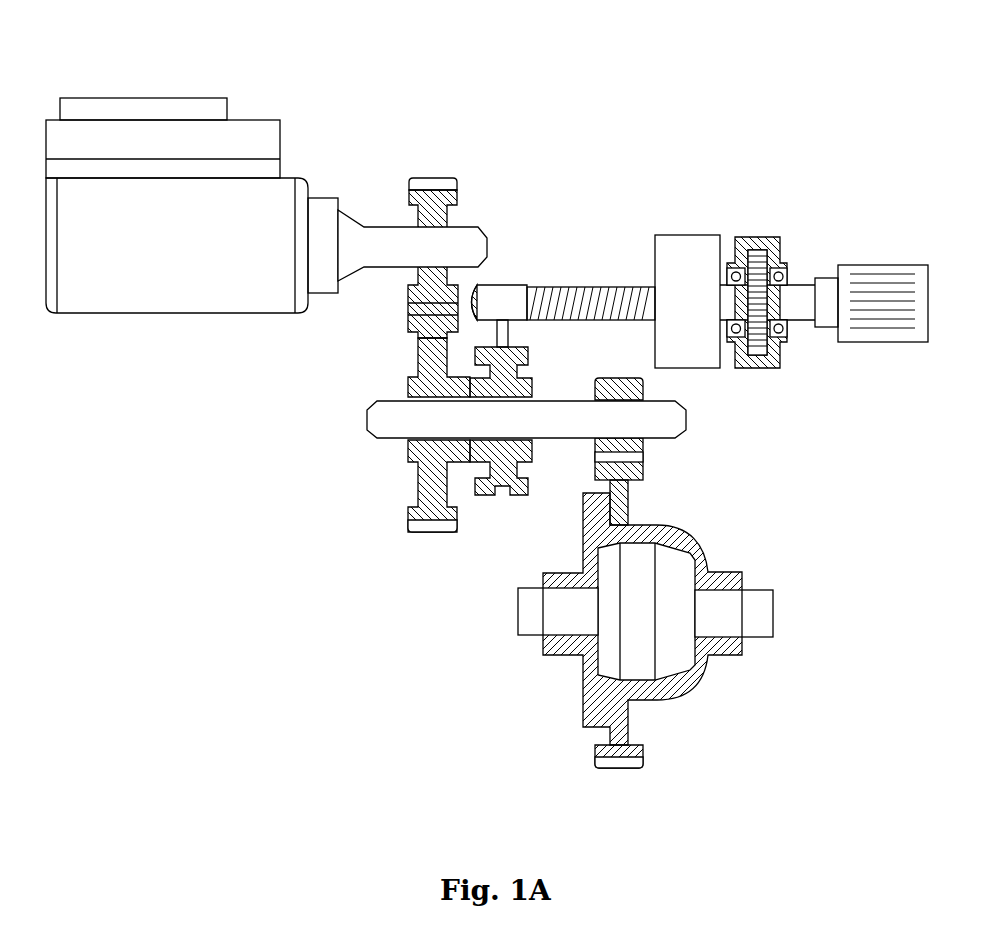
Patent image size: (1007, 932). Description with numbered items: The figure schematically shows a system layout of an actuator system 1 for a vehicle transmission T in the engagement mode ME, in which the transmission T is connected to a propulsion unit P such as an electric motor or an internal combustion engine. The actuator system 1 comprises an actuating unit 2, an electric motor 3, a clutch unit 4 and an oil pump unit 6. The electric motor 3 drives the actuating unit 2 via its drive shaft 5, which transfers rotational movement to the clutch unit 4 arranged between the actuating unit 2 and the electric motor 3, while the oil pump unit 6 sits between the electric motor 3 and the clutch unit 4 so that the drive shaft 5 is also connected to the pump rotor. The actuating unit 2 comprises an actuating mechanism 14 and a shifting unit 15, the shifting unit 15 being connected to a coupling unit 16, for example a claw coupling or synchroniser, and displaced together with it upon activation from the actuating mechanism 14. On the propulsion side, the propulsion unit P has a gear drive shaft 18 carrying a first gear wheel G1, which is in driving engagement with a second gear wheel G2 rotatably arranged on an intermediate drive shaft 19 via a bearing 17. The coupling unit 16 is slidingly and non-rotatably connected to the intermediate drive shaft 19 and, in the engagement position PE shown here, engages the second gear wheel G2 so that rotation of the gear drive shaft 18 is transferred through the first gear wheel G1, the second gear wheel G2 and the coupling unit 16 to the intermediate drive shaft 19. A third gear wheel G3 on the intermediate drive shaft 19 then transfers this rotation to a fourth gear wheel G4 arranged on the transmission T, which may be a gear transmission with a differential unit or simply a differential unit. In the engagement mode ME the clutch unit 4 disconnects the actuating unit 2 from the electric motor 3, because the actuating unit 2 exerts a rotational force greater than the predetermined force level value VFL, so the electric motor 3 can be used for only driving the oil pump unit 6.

The propulsion unit P is at (297, 92).
The engagement mode ME is at (607, 60).
The actuating unit 2 is at (608, 162).
The actuator system 1 is at (808, 162).
The gear drive shaft 18 is at (385, 245).
The first gear wheel G1 is at (460, 200).
The second gear wheel G2 is at (418, 340).
The bearing 17 is at (400, 445).
The shifting unit 15 is at (505, 330).
The actuating mechanism 14 is at (608, 290).
The clutch unit 4 is at (690, 235).
The drive shaft 5 is at (797, 300).
The oil pump unit 6 is at (795, 248).
The electric motor 3 is at (885, 265).
The predetermined force level value VFL is at (587, 370).
The coupling unit 16 is at (518, 495).
The engagement position PE is at (485, 508).
The third gear wheel G3 is at (645, 392).
The fourth gear wheel G4 is at (645, 468).
The intermediate drive shaft 19 is at (407, 418).
The transmission T is at (545, 692).